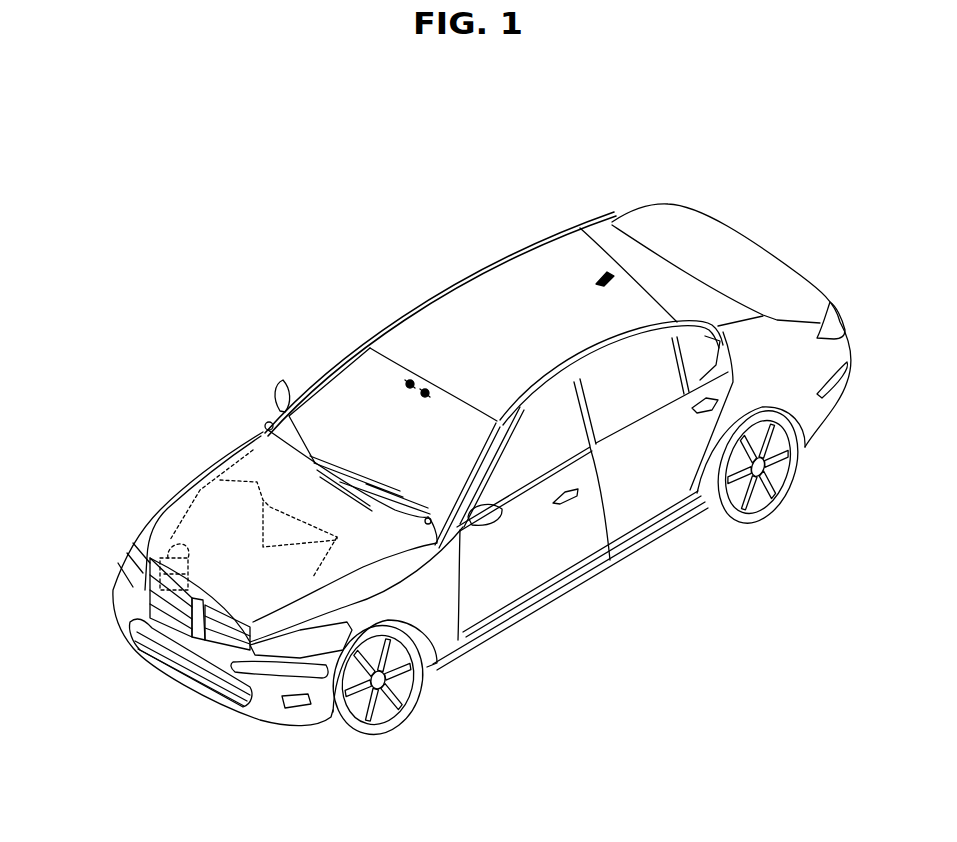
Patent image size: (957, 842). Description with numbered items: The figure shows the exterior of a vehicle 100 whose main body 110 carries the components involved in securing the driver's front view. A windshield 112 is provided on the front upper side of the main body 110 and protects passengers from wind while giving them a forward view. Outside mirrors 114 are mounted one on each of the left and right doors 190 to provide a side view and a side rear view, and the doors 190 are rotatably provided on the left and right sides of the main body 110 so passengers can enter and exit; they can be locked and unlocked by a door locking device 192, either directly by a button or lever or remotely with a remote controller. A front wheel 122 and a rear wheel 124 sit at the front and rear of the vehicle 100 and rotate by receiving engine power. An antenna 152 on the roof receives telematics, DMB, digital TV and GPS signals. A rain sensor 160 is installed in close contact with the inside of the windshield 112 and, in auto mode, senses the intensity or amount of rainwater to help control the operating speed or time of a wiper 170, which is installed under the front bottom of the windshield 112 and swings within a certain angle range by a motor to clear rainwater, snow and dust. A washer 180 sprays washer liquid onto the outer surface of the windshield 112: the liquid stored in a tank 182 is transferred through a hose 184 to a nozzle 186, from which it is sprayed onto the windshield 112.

The vehicle 100 is at (292, 210).
The main body 110 is at (348, 326).
The windshield 112 is at (355, 378).
The outside mirrors 114 is at (275, 393).
The front wheel 122 is at (406, 686).
The rear wheel 124 is at (770, 470).
The antenna 152 is at (606, 281).
The rain sensor 160 is at (410, 382).
The wiper 170 is at (262, 427).
The washer 180 is at (178, 548).
The tank 182 is at (135, 645).
The hose 184 is at (200, 477).
The nozzle 186 is at (213, 612).
The doors 190 is at (552, 548).
The door locking device 192 is at (582, 495).